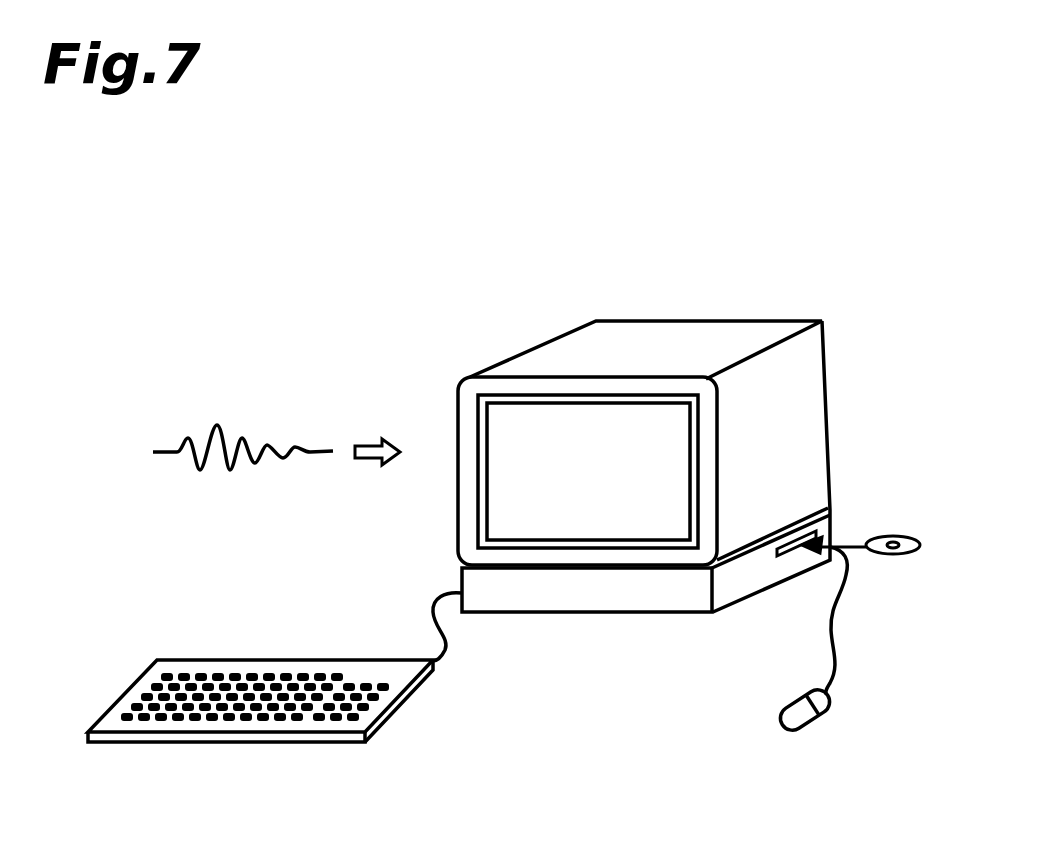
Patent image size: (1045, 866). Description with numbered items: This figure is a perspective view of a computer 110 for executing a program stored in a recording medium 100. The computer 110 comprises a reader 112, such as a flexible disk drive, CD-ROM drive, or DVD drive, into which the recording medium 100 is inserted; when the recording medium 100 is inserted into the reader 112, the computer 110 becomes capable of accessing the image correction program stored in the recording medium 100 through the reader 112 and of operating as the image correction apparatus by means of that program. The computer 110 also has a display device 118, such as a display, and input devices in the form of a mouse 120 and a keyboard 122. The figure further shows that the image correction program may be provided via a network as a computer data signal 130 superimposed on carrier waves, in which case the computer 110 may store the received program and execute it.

The recording medium 100 is at (893, 556).
The computer 110 is at (552, 330).
The reader 112 is at (788, 558).
The display device 118 is at (496, 452).
The mouse 120 is at (797, 737).
The keyboard 122 is at (329, 659).
The computer data signal 130 is at (218, 423).